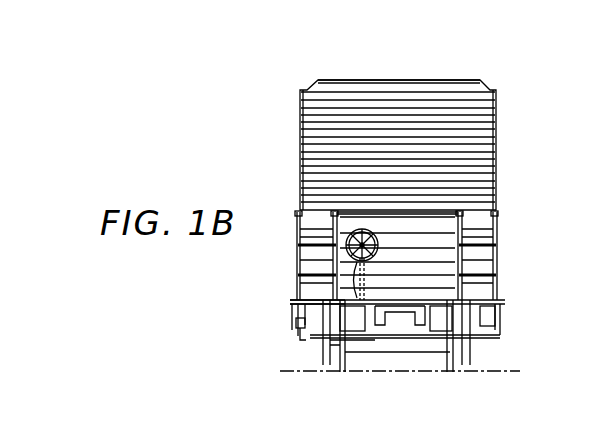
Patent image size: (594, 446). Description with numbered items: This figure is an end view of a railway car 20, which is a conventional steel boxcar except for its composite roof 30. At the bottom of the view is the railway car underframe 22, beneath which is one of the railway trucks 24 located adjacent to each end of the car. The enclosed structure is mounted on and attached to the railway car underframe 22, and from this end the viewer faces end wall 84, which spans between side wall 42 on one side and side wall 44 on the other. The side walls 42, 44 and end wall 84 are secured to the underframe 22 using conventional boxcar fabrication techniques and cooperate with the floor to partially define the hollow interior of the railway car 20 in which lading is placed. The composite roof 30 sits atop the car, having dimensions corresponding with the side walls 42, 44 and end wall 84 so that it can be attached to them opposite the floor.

The railway car 20 is at (517, 173).
The railway car underframe 22 is at (295, 317).
The railway truck 24 is at (425, 348).
The composite roof 30 is at (355, 79).
The side wall 42 is at (300, 128).
The side wall 44 is at (497, 128).
The end wall 84 is at (427, 140).